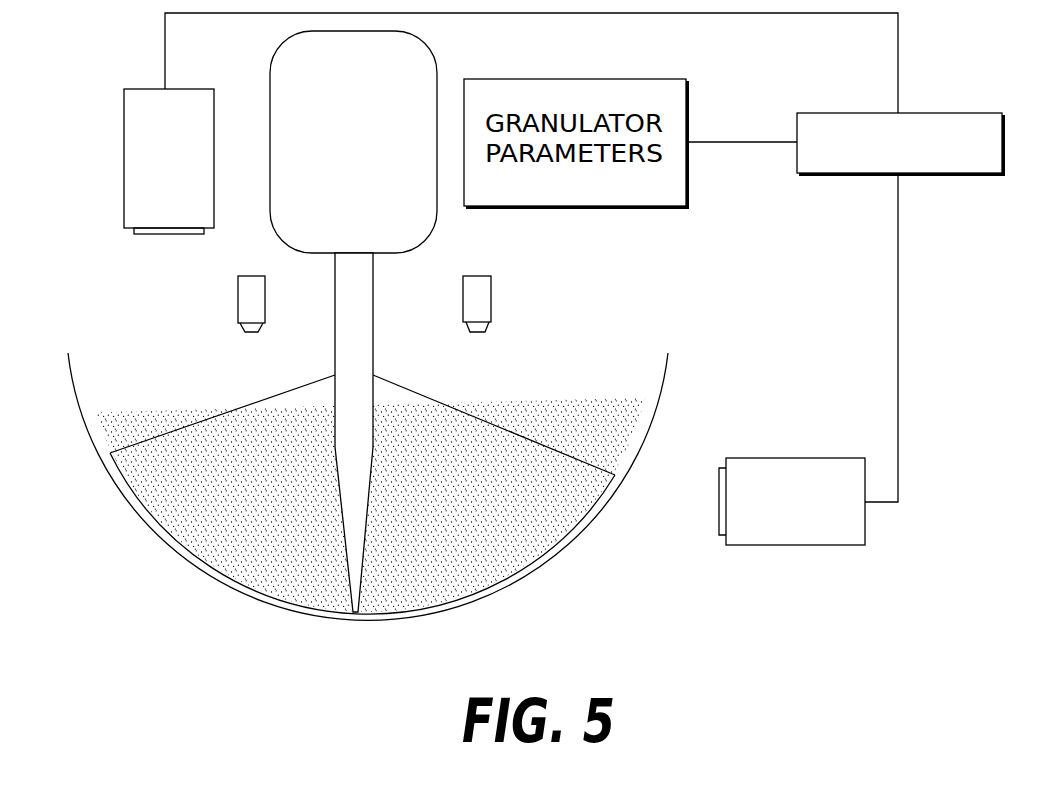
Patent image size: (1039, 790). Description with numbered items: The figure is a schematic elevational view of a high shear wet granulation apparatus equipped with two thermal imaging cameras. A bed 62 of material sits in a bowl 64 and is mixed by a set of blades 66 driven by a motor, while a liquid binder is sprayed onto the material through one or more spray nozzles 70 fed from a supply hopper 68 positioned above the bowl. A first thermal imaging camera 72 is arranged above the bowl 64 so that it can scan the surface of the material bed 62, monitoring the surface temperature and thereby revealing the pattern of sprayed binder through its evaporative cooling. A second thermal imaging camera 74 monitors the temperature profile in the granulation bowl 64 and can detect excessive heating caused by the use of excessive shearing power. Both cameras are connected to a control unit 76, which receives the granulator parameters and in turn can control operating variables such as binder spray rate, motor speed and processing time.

The bed of material 62 is at (591, 397).
The bowl 64 is at (668, 360).
The set of blades 66 is at (400, 384).
The hopper 68 is at (437, 45).
The spray nozzles 70 is at (238, 298).
The first thermal imaging camera 72 is at (124, 113).
The second thermal imaging camera 74 is at (803, 547).
The control unit 76 is at (851, 175).